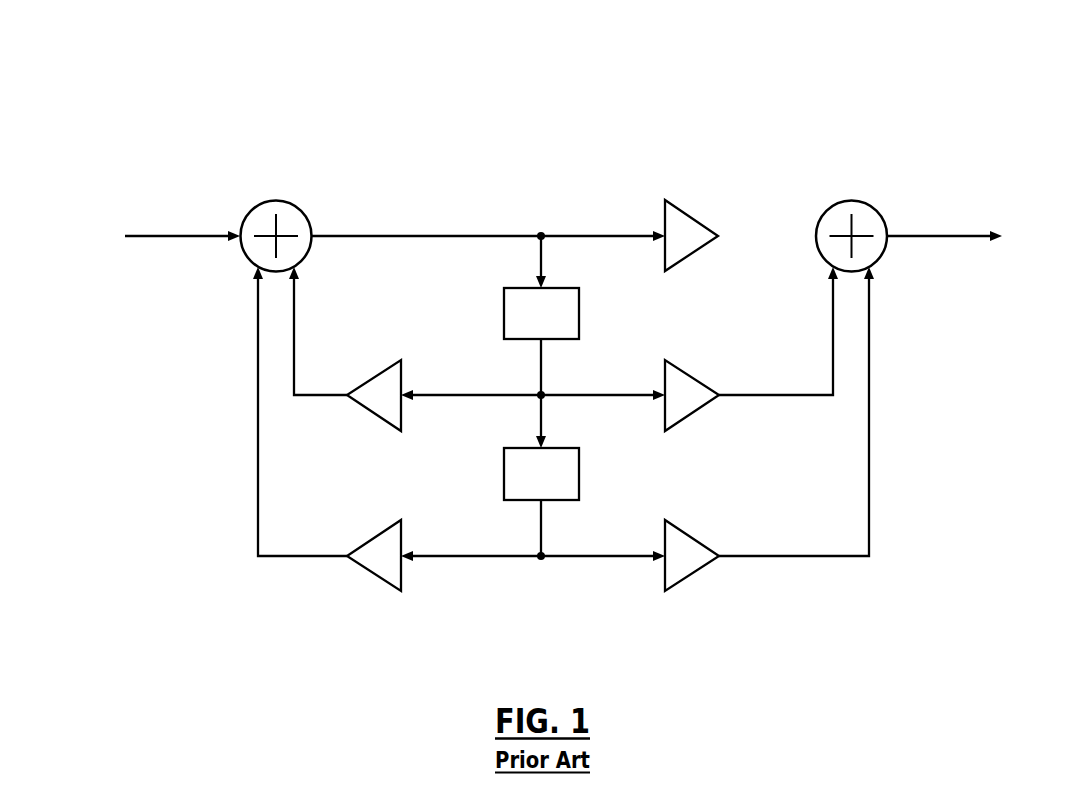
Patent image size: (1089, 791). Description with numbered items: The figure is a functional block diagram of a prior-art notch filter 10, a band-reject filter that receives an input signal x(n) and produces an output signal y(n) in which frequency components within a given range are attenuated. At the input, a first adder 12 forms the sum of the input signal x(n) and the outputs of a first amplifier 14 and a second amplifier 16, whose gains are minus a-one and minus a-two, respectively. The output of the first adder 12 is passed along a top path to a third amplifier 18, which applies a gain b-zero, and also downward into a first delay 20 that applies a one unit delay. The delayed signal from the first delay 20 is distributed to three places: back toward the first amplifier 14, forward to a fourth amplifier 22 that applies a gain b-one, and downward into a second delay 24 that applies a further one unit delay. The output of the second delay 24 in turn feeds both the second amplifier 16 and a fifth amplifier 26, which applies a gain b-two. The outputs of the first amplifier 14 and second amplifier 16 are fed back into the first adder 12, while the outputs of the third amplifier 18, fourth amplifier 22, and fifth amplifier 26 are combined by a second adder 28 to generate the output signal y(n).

The notch filter 10 is at (136, 55).
The first adder 12 is at (277, 200).
The first amplifier 14 is at (382, 373).
The second amplifier 16 is at (382, 534).
The third amplifier 18 is at (692, 217).
The first delay 20 is at (504, 313).
The fourth amplifier 22 is at (692, 376).
The second delay 24 is at (504, 473).
The fifth amplifier 26 is at (692, 537).
The second adder 28 is at (852, 200).